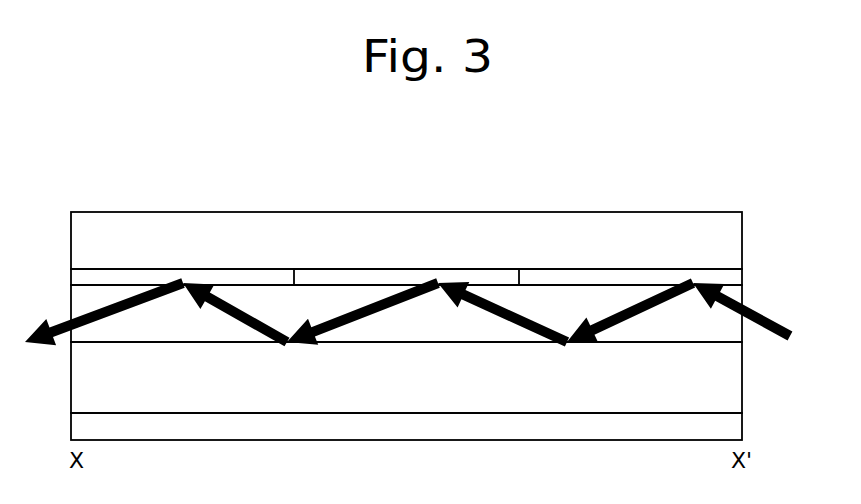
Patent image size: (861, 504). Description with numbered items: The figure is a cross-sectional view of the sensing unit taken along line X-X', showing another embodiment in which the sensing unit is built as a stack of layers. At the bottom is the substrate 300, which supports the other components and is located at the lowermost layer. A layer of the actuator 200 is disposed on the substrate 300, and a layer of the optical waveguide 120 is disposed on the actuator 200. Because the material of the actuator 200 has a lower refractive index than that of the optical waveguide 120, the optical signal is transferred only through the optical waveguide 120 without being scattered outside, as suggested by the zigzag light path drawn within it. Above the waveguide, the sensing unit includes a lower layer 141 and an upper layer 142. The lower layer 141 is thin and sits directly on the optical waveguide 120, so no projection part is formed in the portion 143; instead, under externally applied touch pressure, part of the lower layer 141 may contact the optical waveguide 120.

The upper layer 142 is at (735, 237).
The lower layer 141 is at (735, 275).
The portion 143 is at (460, 273).
The optical waveguide 120 is at (735, 295).
The actuator 200 is at (735, 380).
The substrate 300 is at (735, 428).